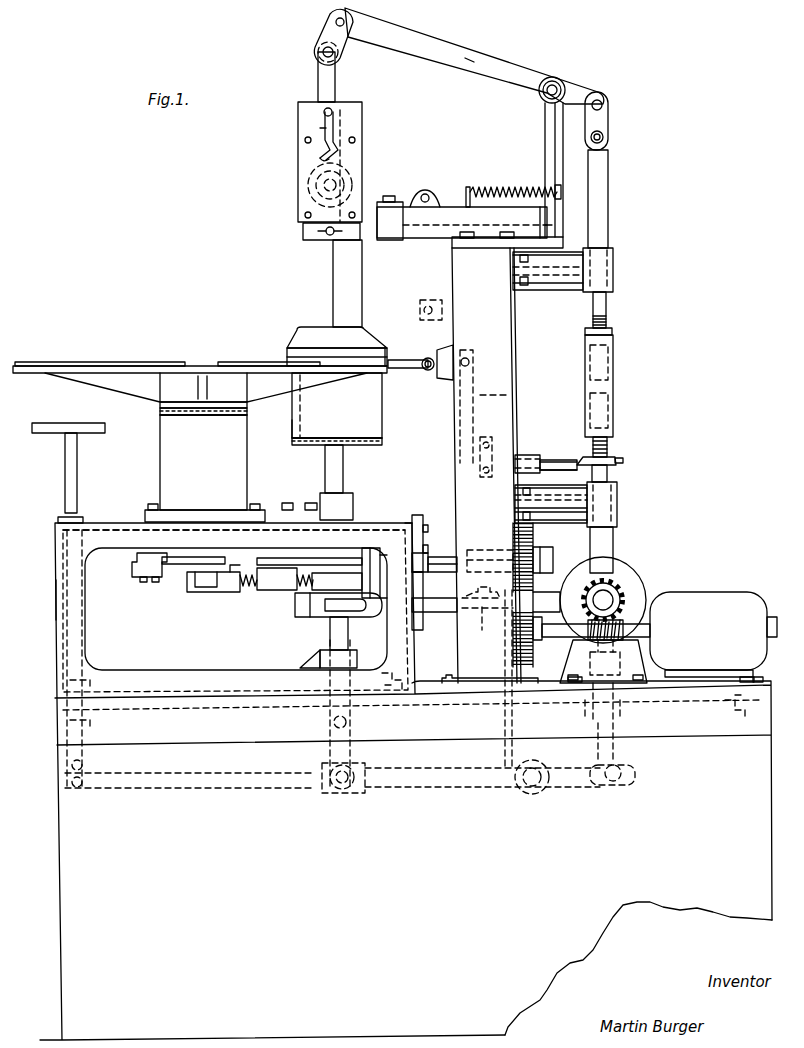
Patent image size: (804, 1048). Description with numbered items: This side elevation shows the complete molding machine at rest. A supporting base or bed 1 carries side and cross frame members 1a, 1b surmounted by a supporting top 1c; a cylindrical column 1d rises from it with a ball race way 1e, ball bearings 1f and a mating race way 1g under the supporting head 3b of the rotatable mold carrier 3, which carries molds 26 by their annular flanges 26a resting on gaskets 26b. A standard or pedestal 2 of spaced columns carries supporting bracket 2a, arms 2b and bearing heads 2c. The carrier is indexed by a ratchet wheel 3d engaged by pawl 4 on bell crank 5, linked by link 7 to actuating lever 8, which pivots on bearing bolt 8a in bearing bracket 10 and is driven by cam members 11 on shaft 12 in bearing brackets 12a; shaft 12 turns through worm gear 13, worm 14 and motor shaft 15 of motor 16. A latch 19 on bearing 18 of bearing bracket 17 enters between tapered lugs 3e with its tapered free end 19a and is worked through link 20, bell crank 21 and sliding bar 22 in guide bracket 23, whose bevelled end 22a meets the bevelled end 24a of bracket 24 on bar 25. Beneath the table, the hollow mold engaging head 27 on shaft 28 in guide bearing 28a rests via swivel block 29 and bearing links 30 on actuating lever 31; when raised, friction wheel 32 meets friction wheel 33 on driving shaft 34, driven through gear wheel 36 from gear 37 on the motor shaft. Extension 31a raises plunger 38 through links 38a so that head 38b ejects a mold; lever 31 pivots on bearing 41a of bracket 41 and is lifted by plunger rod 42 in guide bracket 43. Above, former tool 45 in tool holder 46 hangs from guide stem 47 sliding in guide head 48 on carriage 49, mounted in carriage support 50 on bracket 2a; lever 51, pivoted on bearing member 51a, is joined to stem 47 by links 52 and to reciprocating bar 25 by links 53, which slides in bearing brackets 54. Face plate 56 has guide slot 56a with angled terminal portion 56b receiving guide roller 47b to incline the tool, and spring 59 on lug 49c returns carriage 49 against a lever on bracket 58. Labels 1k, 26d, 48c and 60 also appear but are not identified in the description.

The supporting base or bed 1 is at (421, 690).
The side frame members 1a is at (212, 670).
The cross frame members 1b is at (56, 600).
The supporting top 1c is at (407, 523).
The cylindrical support or column 1d is at (247, 470).
The ball bearing annular race way 1e is at (240, 418).
The ball bearings 1f is at (160, 412).
The annular race way 1g is at (247, 405).
The frame top plate 1k is at (185, 550).
The standard or pedestal 2 is at (510, 375).
The supporting bracket 2a is at (486, 248).
The upwardly extending arms 2b is at (545, 146).
The bearing heads 2c is at (562, 84).
The mold carrier 3 is at (201, 366).
The supporting head 3b is at (235, 362).
The ratchet wheel 3d is at (243, 560).
The tapered lugs 3e is at (387, 347).
The pawl 4 is at (135, 556).
The bell crank 5 is at (175, 570).
The link 7 is at (230, 587).
The actuating lever 8 is at (437, 600).
The bearing bolt 8a is at (462, 590).
The bearing bracket 10 is at (482, 612).
The cam members 11 is at (340, 553).
The transversely extending shaft 12 is at (623, 620).
The bearing brackets 12a is at (573, 665).
The worm gear 13 is at (605, 598).
The worm 14 is at (625, 603).
The motor shaft 15 is at (640, 630).
The motor 16 is at (718, 596).
The bearing bracket 17 is at (440, 378).
The bearing 18 is at (425, 360).
The pivoted lever or latch 19 is at (466, 355).
The free end 19a is at (405, 368).
The vertically extending link 20 is at (512, 396).
The bell crank 21 is at (480, 460).
The horizontally extending actuating bar 22 is at (554, 460).
The inclined or bevelled end 22a is at (623, 462).
The guide or bearing bracket 23 is at (525, 455).
The bracket 24 is at (618, 448).
The bevelled end 24a is at (585, 457).
The reciprocatory connecting link or bar 25 is at (606, 310).
The molds 26 is at (300, 340).
The overhanging annular flange 26a is at (289, 352).
The gasket 26b is at (65, 355).
The housing bottom plate 26d is at (345, 446).
The mold engaging supporting and actuating head 27 is at (376, 430).
The shaft 28 is at (343, 470).
The guide bearing 28a is at (353, 503).
The swivel block 29 is at (328, 721).
The bearing links 30 is at (350, 760).
The actuating lever 31 is at (428, 780).
The extension 31a is at (208, 788).
The friction wheel 32 is at (372, 605).
The second friction wheel 33 is at (417, 548).
The driving shaft 34 is at (548, 560).
The gear wheel 36 is at (533, 555).
The gear 37 is at (513, 652).
The vertically movable plunger 38 is at (67, 643).
The links 38a is at (84, 766).
The head 38b is at (45, 423).
The bracket 41 is at (505, 750).
The bearing 41a is at (540, 785).
The actuating or plunger rod 42 is at (618, 752).
The guide bearing bracket 43 is at (632, 708).
The former tool 45 is at (333, 268).
The tool holder 46 is at (303, 235).
The plunger or guide stem 47 is at (318, 73).
The guide roller 47b is at (332, 110).
The guide head 48 is at (298, 160).
The dial 48c is at (355, 178).
The carriage 49 is at (438, 210).
The lug 49c is at (470, 187).
The carriage guide support or bracket 50 is at (420, 235).
The lever 51 is at (468, 70).
The bearing member 51a is at (548, 80).
The links 52 is at (320, 38).
The links 53 is at (604, 122).
The bearing brackets 54 is at (613, 270).
The face plate 56 is at (345, 126).
The guide slot 56a is at (320, 128).
The angularly extending terminal portion 56b is at (335, 152).
The bracket 58 is at (428, 300).
The spring 59 is at (525, 187).
The cap 60 is at (312, 327).